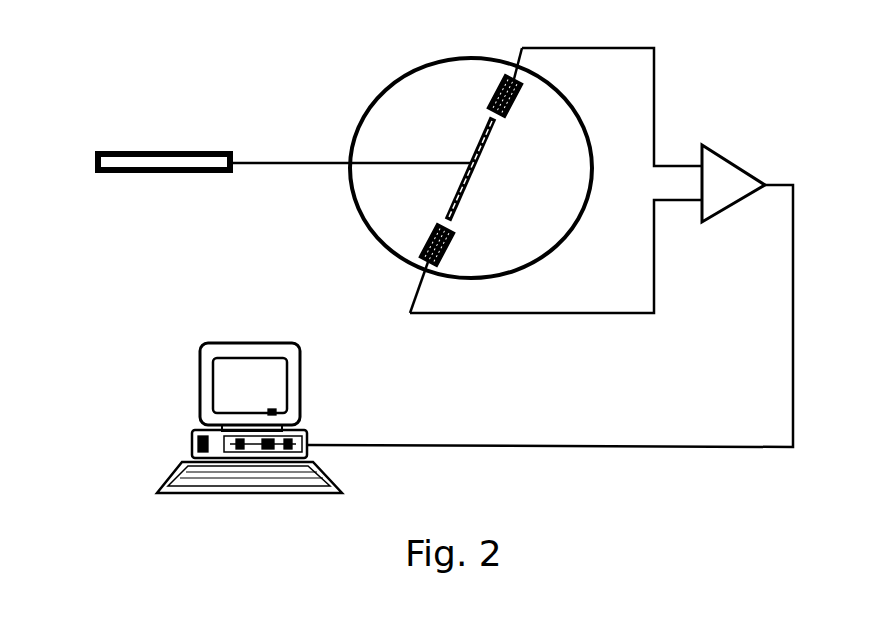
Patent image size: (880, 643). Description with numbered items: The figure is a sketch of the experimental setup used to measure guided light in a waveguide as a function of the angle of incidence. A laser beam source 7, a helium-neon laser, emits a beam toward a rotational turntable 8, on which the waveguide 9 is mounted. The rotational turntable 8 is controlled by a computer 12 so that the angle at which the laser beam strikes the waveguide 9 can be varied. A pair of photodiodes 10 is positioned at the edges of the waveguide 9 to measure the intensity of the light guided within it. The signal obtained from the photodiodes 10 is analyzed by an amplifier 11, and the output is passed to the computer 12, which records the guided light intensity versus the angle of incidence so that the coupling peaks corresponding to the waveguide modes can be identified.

The laser beam source 7 is at (286, 142).
The rotational turntable 8 is at (471, 168).
The waveguide 9 is at (479, 169).
The photodiodes 10 is at (481, 180).
The amplifier 11 is at (733, 183).
The computer 12 is at (249, 418).